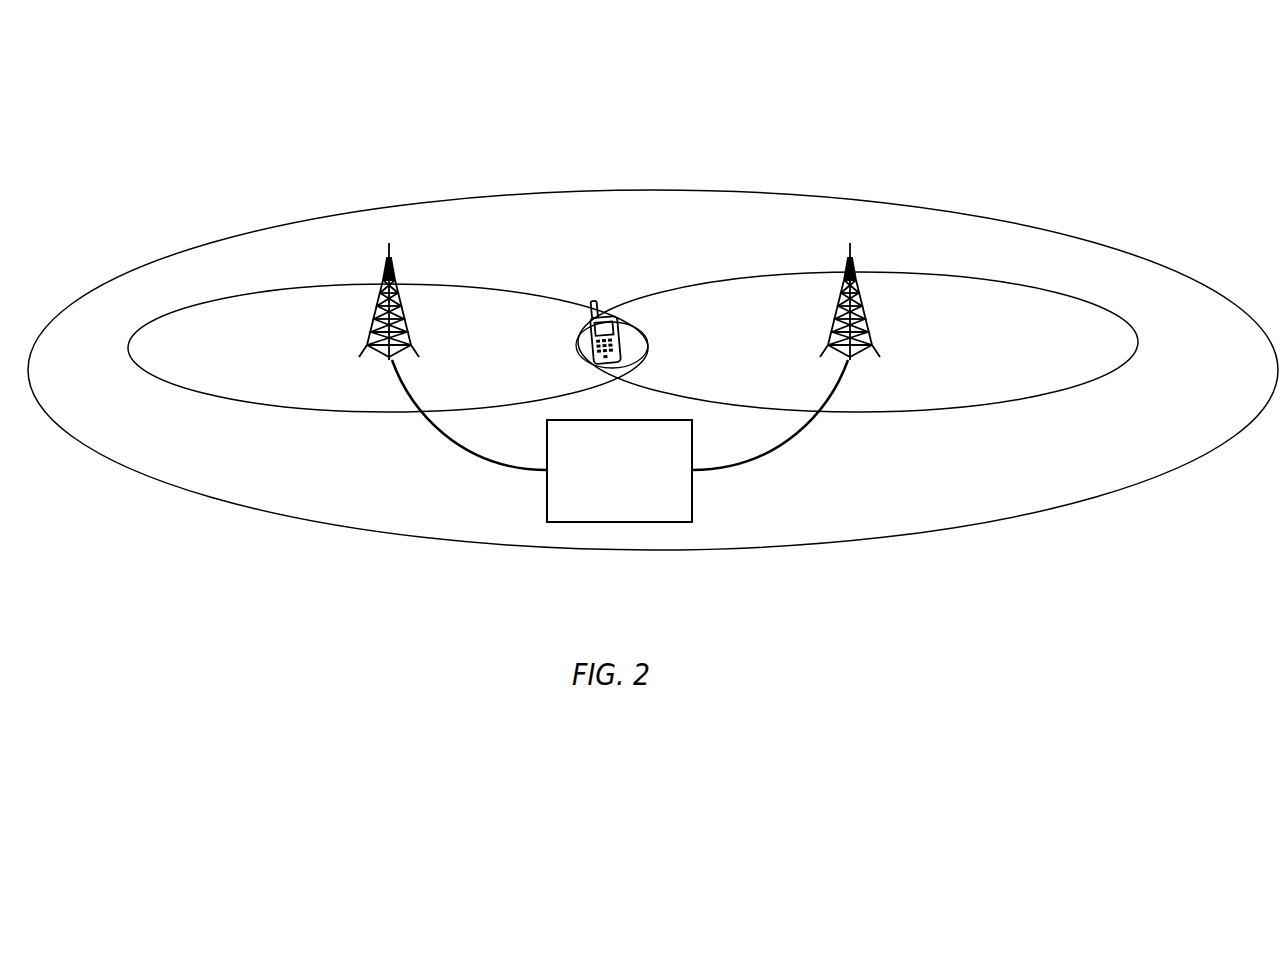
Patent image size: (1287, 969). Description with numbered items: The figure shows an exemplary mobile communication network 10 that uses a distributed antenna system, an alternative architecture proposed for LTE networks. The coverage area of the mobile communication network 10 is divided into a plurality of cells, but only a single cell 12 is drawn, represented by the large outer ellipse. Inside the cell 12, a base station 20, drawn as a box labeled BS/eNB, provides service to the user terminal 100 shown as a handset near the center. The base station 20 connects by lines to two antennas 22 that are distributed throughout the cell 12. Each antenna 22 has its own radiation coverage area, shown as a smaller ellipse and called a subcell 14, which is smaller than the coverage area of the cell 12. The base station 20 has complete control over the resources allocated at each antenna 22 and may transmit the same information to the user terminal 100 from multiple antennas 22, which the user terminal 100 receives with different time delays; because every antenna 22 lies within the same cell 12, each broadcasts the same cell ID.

The mobile communication network 10 is at (797, 98).
The cell 12 is at (653, 370).
The subcell 14 is at (633, 342).
The base station 20 is at (619, 471).
The antenna 22 is at (386, 280).
The user terminal 100 is at (618, 326).